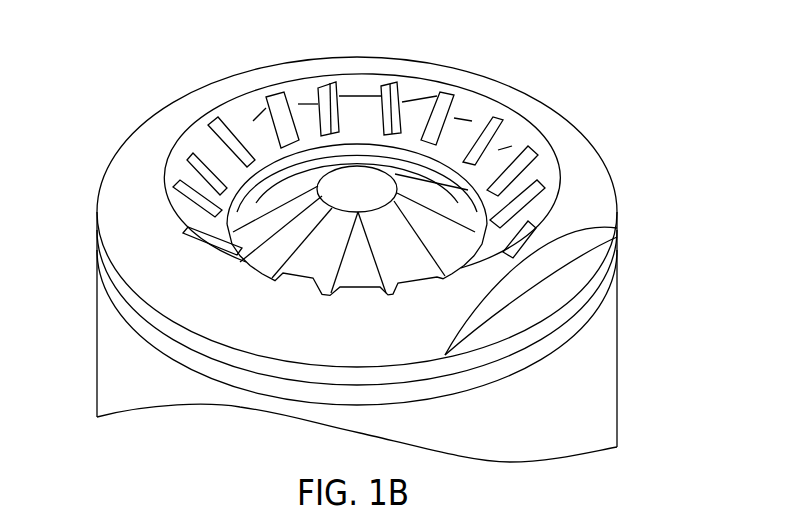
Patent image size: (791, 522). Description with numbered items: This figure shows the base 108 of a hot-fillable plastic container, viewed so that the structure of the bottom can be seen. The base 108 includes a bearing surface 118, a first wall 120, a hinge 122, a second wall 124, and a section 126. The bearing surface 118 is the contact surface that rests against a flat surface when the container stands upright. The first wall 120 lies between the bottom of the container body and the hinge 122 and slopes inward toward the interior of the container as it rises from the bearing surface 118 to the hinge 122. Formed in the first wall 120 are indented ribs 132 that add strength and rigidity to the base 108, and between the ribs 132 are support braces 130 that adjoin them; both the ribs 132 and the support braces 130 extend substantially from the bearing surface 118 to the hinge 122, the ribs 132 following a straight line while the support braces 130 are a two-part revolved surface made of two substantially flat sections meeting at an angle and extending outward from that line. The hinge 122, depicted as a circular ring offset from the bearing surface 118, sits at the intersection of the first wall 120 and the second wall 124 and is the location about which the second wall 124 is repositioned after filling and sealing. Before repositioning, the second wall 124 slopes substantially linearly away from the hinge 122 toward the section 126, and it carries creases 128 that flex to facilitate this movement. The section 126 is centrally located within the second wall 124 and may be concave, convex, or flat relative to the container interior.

The base 108 is at (219, 57).
The bearing surface 118 is at (122, 186).
The first wall 120 is at (201, 132).
The hinge 122 is at (421, 250).
The second wall 124 is at (413, 250).
The section 126 is at (345, 180).
The creases 128 is at (247, 265).
The support braces 130 is at (408, 110).
The indented ribs 132 is at (328, 90).